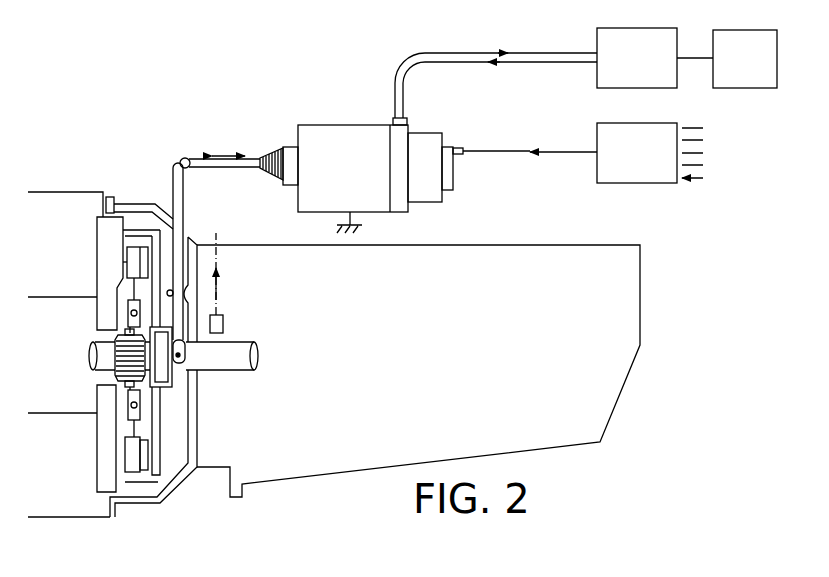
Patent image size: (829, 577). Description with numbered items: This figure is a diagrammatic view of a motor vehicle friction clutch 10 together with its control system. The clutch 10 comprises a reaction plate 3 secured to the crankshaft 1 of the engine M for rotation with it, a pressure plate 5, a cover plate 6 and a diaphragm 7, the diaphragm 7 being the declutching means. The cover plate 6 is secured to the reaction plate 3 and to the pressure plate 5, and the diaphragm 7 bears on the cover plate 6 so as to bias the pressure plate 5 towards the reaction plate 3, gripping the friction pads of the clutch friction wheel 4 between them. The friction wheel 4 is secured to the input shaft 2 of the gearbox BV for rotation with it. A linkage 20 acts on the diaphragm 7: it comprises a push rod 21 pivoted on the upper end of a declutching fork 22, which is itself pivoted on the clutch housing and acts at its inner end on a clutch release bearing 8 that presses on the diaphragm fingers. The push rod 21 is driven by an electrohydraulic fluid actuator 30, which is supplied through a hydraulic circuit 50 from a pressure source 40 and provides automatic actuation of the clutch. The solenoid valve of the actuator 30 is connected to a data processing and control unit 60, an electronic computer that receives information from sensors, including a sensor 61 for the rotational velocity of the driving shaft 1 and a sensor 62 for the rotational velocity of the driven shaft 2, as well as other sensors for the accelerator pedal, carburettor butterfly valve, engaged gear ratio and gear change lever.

The crankshaft 1 is at (53, 297).
The engine M is at (73, 290).
The friction clutch 10 is at (89, 206).
The sensor 61 is at (110, 197).
The declutching fork 22 is at (170, 200).
The linkage 20 is at (178, 150).
The push rod 21 is at (203, 156).
The fluid actuator 30 is at (322, 120).
The pressure source 40 is at (681, 91).
The hydraulic circuit 50 is at (780, 92).
The data processing and control unit 60 is at (682, 203).
The gearbox BV is at (635, 371).
The sensor 62 is at (222, 302).
The input shaft 2 is at (250, 370).
The clutch release bearing 8 is at (174, 387).
The clutch friction wheel 4 is at (120, 433).
The reaction plate 3 is at (97, 497).
The pressure plate 5 is at (145, 480).
The cover plate 6 is at (157, 470).
The diaphragm 7 is at (163, 440).